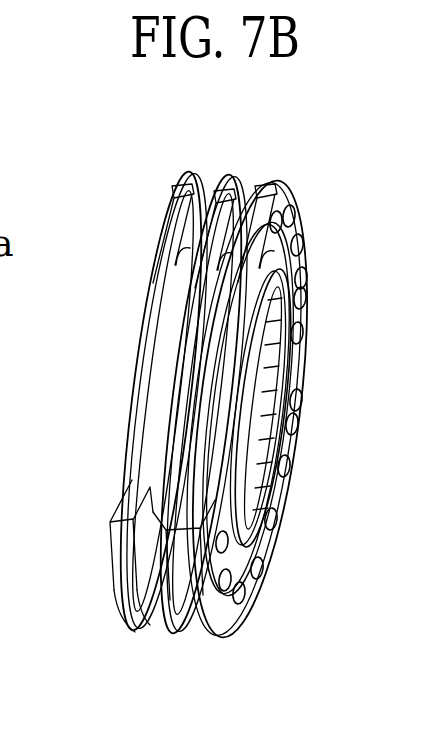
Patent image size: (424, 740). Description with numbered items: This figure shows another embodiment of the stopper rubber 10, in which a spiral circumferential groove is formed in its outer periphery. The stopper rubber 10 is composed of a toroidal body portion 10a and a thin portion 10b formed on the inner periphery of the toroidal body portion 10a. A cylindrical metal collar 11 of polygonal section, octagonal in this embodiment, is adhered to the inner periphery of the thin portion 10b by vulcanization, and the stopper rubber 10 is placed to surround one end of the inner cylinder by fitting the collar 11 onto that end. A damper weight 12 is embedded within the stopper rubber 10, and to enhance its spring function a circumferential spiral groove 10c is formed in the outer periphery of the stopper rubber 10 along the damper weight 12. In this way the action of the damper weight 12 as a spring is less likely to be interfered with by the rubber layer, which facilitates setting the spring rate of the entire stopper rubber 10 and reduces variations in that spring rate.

The stopper rubber 10 is at (300, 188).
The toroidal body portion 10a is at (304, 262).
The thin portion 10b is at (248, 299).
The circumferential spiral groove 10c is at (155, 560).
The cylindrical metal collar 11 is at (252, 404).
The damper weight 12 is at (140, 336).